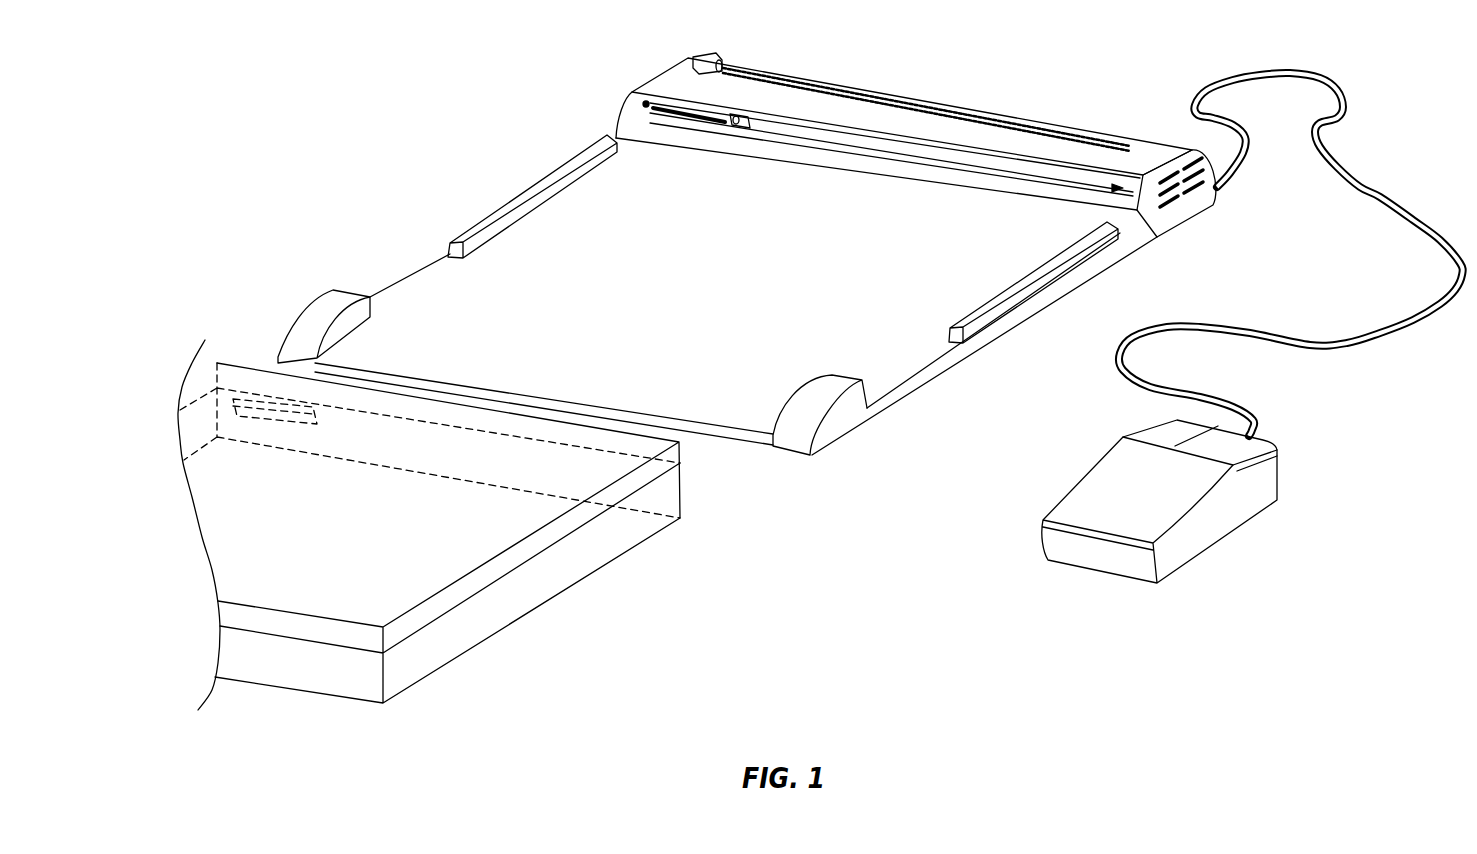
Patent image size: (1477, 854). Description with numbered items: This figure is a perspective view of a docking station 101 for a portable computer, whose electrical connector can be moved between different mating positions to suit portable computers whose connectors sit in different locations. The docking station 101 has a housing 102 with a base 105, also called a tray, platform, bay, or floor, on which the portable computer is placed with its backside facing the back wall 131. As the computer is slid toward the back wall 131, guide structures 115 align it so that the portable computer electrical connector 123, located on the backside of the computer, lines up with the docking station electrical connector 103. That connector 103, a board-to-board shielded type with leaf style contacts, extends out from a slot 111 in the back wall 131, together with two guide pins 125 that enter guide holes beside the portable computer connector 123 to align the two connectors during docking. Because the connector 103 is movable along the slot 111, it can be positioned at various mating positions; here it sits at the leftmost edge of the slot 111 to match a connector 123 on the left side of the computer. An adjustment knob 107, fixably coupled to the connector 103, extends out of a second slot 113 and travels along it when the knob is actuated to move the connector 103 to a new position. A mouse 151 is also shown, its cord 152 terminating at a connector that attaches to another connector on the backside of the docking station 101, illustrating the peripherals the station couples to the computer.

The docking station 101 is at (492, 141).
The docking station housing 102 is at (627, 102).
The docking station electrical connector 103 is at (738, 120).
The base 105 is at (768, 293).
The adjustment knob 107 is at (704, 54).
The slot 111 is at (1140, 215).
The slot 113 is at (1060, 130).
The guide structures 115 is at (357, 290).
The portable computer electrical connector 123 is at (250, 407).
The guide pins 125 is at (737, 122).
The back wall 131 is at (1023, 187).
The mouse 151 is at (1278, 470).
The cord 152 is at (1253, 79).